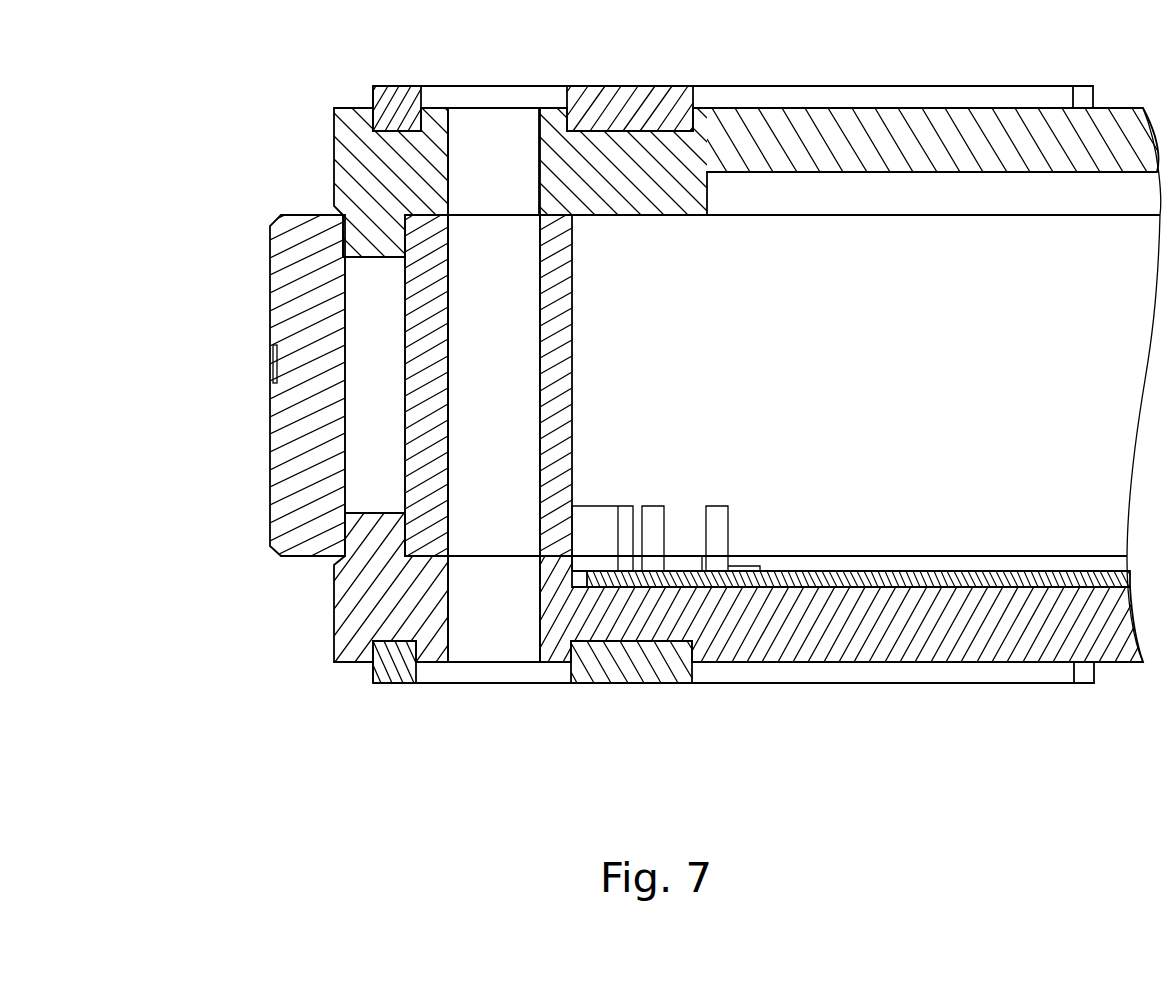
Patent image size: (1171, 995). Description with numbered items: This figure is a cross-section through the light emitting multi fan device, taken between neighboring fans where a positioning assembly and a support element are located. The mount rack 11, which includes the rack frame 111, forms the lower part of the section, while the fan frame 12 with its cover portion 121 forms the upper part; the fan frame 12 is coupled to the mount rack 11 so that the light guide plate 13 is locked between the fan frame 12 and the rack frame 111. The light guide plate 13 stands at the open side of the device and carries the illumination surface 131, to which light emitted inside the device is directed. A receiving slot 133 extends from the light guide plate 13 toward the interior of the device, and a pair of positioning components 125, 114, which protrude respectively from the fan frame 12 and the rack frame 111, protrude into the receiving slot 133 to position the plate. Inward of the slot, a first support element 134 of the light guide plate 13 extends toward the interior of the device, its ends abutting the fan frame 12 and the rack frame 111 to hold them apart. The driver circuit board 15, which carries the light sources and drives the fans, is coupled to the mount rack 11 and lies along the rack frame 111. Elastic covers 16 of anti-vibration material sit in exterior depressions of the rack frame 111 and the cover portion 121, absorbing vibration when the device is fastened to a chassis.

The mount rack 11 is at (313, 621).
The rack frame 111 is at (831, 638).
The positioning component 114 is at (378, 523).
The fan frame 12 is at (320, 128).
The cover portion 121 is at (818, 132).
The positioning component 125 is at (377, 248).
The light guide plate 13 is at (248, 385).
The illumination surface 131 is at (287, 424).
The receiving slot 133 is at (370, 355).
The first support element 134 is at (573, 288).
The driver circuit board 15 is at (732, 596).
The elastic cover 16 is at (398, 100).